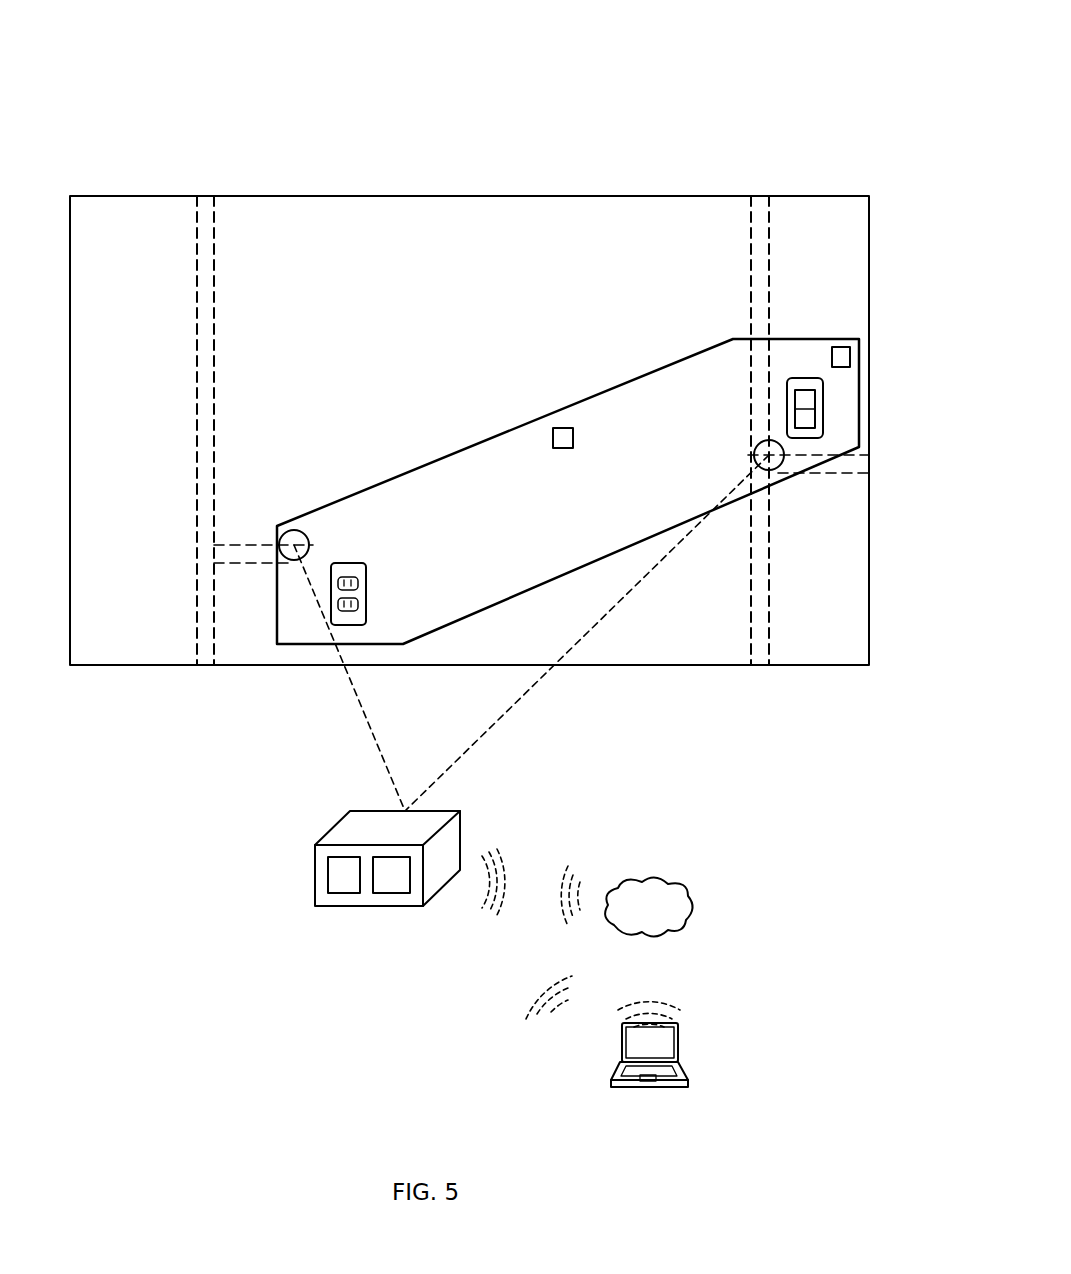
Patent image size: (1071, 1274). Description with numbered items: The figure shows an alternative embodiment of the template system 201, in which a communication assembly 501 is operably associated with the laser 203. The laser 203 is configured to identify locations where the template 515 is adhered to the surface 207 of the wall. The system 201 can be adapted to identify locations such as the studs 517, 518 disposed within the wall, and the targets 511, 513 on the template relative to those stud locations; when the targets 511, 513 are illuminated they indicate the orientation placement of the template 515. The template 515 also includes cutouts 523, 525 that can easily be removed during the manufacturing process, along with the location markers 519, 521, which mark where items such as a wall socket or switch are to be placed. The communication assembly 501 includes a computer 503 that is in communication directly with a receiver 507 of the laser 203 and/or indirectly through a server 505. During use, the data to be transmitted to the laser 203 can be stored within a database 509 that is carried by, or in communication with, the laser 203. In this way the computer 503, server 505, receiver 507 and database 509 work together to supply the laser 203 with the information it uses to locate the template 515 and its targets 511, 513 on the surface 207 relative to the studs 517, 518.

The system 201 is at (122, 62).
The surface 207 is at (155, 213).
The stud 517 is at (295, 213).
The stud 518 is at (751, 300).
The template 515 is at (533, 590).
The target 511 is at (280, 545).
The target 513 is at (780, 468).
The location marker 519 is at (380, 617).
The location marker 521 is at (833, 407).
The cutout 523 is at (553, 430).
The cutout 525 is at (840, 347).
The laser 203 is at (333, 828).
The database 509 is at (328, 878).
The receiver 507 is at (388, 893).
The server 505 is at (672, 884).
The computer 503 is at (686, 1072).
The communication assembly 501 is at (778, 932).